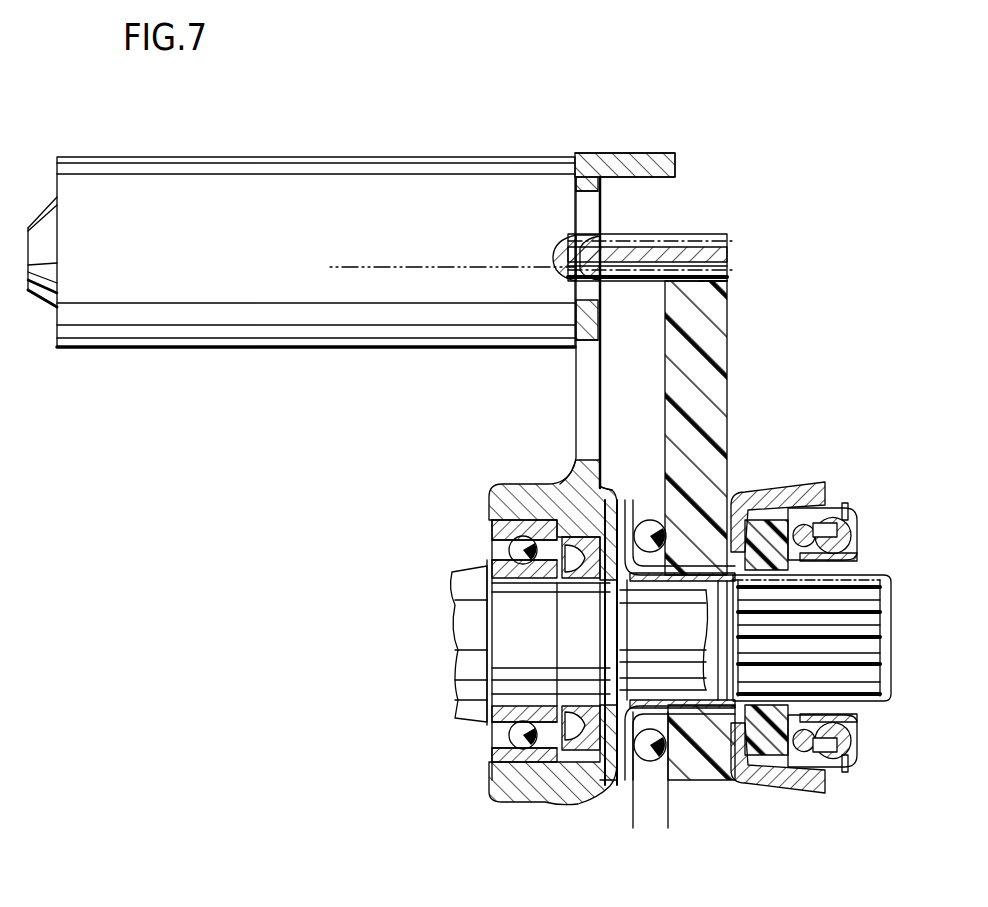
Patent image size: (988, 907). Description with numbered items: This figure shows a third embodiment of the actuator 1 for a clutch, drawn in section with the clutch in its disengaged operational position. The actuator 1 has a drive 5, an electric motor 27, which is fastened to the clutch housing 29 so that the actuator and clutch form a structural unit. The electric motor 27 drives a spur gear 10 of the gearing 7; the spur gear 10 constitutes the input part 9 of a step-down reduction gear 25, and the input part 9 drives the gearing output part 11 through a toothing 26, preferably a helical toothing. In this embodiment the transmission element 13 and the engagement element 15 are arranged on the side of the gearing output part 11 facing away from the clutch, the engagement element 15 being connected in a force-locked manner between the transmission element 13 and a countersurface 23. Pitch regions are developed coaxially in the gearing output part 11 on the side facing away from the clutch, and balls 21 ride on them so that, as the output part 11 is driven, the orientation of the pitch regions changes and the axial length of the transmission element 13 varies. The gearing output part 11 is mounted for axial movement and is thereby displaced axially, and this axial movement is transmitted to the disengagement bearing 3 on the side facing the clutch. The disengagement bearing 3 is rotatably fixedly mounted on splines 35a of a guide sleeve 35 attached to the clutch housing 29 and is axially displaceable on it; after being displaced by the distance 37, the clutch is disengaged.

The actuator 1 is at (511, 98).
The disengagement bearing 3 is at (850, 484).
The drive 5 is at (357, 340).
The gearing 7 is at (658, 288).
The input part 9 is at (718, 258).
The spur gear 10 is at (690, 240).
The output part 11 is at (715, 383).
The transmission element 13 is at (690, 765).
The engagement element 15 is at (591, 800).
The ball 21 is at (662, 527).
The countersurface 23 is at (606, 800).
The reduction gear 25 is at (752, 272).
The toothing 26 is at (727, 283).
The electric motor 27 is at (272, 316).
The clutch housing 29 is at (583, 432).
The guide sleeve 35 is at (830, 650).
The splines 35a is at (866, 668).
The distance 37 is at (700, 815).